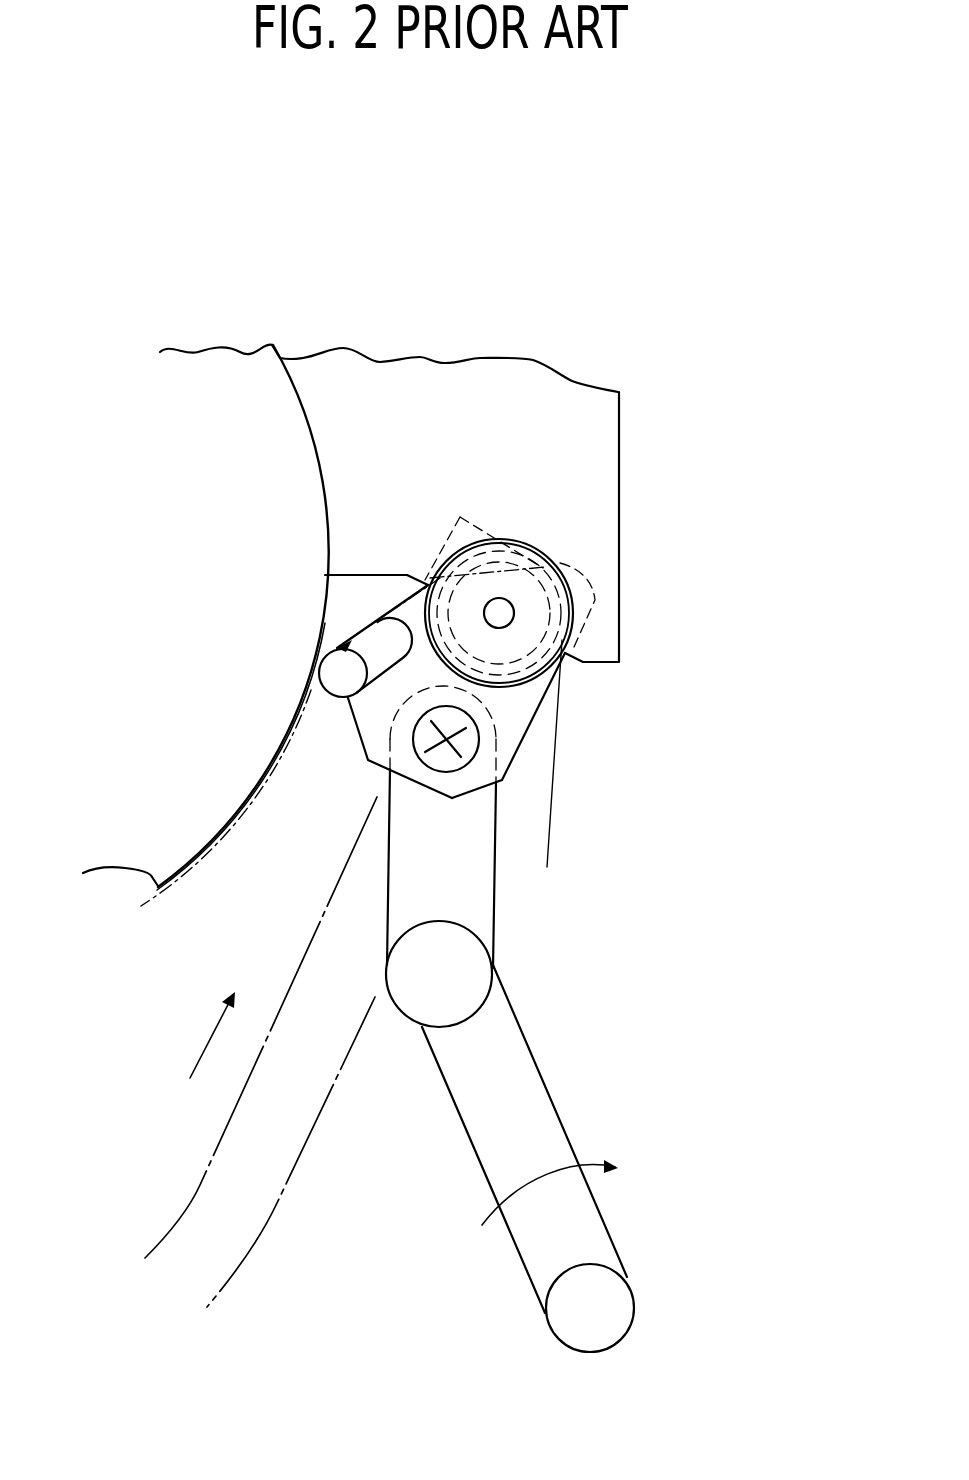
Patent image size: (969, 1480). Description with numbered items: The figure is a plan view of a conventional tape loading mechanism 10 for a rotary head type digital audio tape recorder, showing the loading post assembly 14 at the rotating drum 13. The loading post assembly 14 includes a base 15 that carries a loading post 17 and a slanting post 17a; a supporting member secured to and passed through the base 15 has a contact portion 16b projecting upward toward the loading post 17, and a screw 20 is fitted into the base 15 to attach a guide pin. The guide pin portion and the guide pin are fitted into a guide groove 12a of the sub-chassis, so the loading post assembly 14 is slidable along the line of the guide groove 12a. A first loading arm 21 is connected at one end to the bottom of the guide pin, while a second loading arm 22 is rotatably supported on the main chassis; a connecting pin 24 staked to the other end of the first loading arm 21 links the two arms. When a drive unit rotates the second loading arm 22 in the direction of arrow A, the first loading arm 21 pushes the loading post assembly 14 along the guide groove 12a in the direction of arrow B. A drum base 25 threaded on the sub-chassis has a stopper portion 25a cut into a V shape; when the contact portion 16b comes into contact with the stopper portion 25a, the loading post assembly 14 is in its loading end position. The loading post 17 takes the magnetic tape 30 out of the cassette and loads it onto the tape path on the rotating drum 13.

The tape loading mechanism 10 is at (569, 168).
The guide groove 12a is at (293, 1155).
The rotating drum 13 is at (229, 350).
The loading post assembly 14 is at (548, 718).
The base 15 is at (368, 722).
The contact portion 16b is at (527, 570).
The loading post 17 is at (547, 668).
The slanting post 17a is at (343, 643).
The screw 20 is at (462, 757).
The first loading arm 21 is at (480, 883).
The second loading arm 22 is at (540, 1103).
The connecting pin 24 is at (409, 995).
The drum base 25 is at (603, 417).
The stopper portion 25a is at (490, 563).
The magnetic tape 30 is at (553, 787).
The arrow A is at (540, 1208).
The arrow B is at (196, 1043).